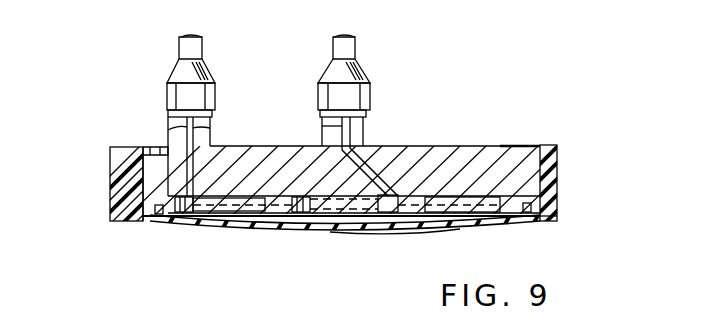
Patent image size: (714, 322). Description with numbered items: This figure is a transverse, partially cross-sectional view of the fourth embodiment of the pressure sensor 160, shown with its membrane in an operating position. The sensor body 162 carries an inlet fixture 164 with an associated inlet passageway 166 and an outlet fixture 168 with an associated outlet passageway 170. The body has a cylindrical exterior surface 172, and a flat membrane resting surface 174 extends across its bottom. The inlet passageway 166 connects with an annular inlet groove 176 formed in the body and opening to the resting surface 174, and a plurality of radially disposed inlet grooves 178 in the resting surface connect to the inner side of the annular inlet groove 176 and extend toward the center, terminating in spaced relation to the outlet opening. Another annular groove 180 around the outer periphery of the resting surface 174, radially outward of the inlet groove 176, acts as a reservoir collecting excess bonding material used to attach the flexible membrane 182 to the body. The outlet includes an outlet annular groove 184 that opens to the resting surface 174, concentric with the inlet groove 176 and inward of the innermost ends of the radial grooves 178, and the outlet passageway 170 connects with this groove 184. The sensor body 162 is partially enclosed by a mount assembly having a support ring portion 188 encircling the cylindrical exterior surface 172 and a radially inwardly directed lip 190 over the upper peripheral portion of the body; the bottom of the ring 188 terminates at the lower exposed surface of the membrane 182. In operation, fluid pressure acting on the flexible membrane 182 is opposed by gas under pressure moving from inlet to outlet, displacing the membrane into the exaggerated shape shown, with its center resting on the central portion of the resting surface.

The manifold assembly 160 is at (132, 108).
The sensor body 162 is at (470, 163).
The inlet fixture 164 is at (215, 127).
The inlet passageway 166 is at (212, 143).
The outlet fixture 168 is at (372, 120).
The outlet passageway 170 is at (395, 152).
The cylindrical exterior surface 172 is at (560, 163).
The membrane resting surface 174 is at (272, 223).
The annular inlet groove 176 is at (190, 213).
The radially disposed inlet grooves 178 is at (483, 205).
The annular groove 180 is at (157, 212).
The flexible membrane 182 is at (452, 226).
The outlet annular groove 184 is at (387, 217).
The support ring portion 188 is at (557, 196).
The radially inwardly directed lip 190 is at (520, 145).